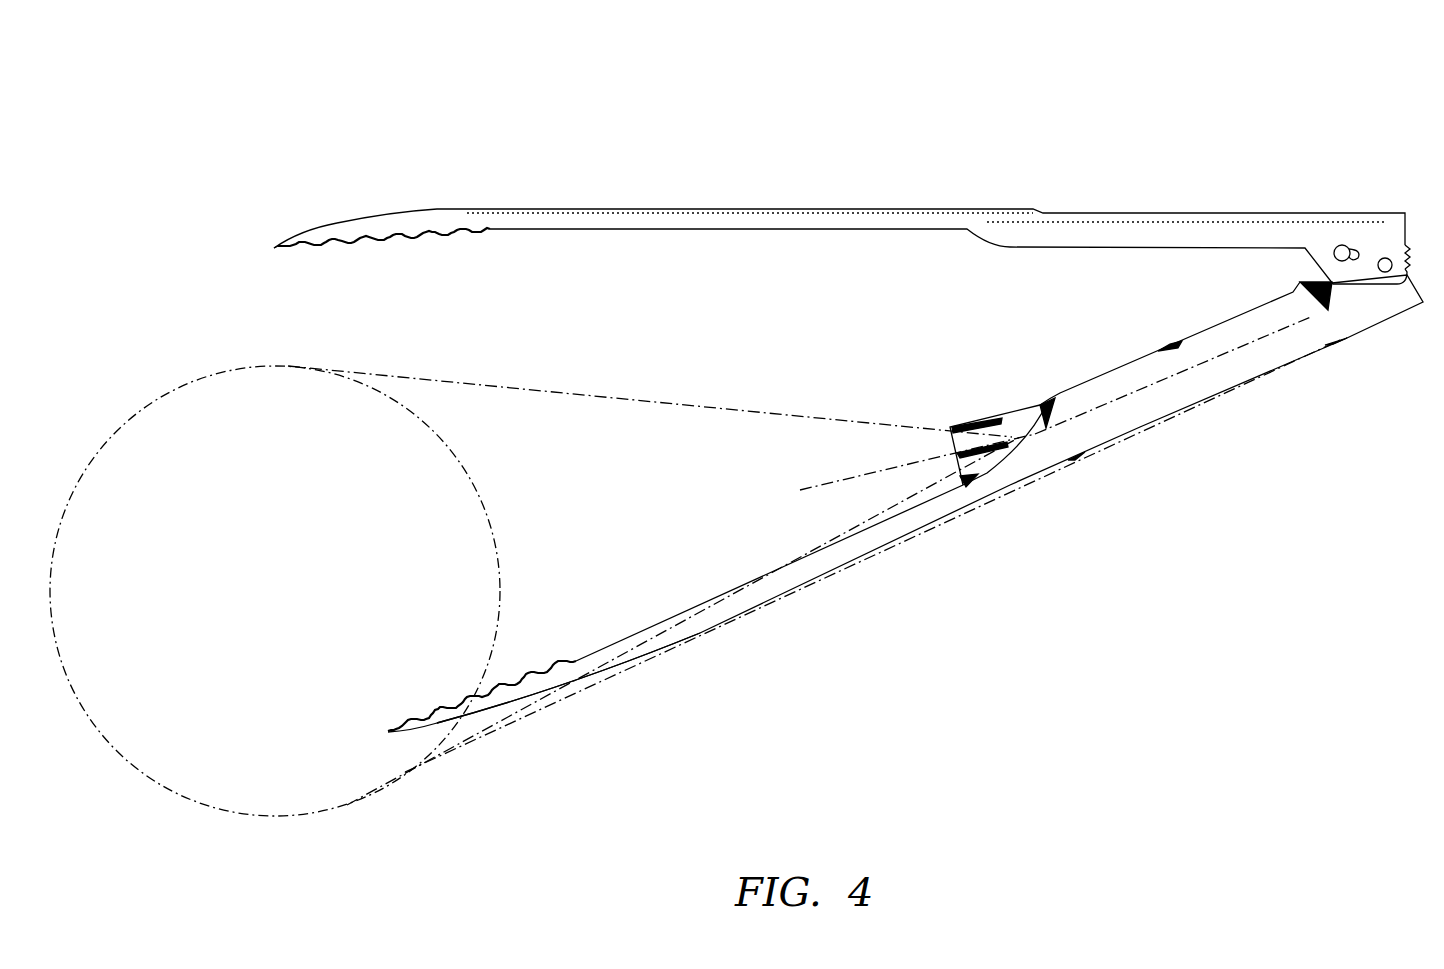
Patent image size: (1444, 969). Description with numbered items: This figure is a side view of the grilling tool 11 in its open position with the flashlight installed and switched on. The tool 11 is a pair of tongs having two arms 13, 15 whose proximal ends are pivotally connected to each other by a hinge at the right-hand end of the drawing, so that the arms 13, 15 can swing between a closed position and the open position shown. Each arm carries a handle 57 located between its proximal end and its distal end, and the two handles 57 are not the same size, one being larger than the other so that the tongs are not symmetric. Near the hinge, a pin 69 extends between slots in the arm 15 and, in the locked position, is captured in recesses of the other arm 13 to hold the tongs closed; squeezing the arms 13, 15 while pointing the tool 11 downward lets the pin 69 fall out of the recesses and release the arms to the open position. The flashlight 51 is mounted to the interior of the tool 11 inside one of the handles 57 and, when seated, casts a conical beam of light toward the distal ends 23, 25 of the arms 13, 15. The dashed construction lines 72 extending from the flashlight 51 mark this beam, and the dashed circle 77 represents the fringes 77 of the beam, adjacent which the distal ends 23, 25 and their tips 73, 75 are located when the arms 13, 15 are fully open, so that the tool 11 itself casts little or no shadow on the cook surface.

The tool 11 is at (1273, 85).
The arm 13 is at (800, 575).
The arm 15 is at (775, 220).
The distal end 23 is at (473, 713).
The distal end 25 is at (360, 228).
The flashlight 51 is at (948, 378).
The handle 57 is at (1213, 210).
The pin 69 is at (1340, 247).
The reference line 72 is at (652, 402).
The tip 73 is at (385, 733).
The tip 75 is at (276, 248).
The fringes 77 is at (287, 365).